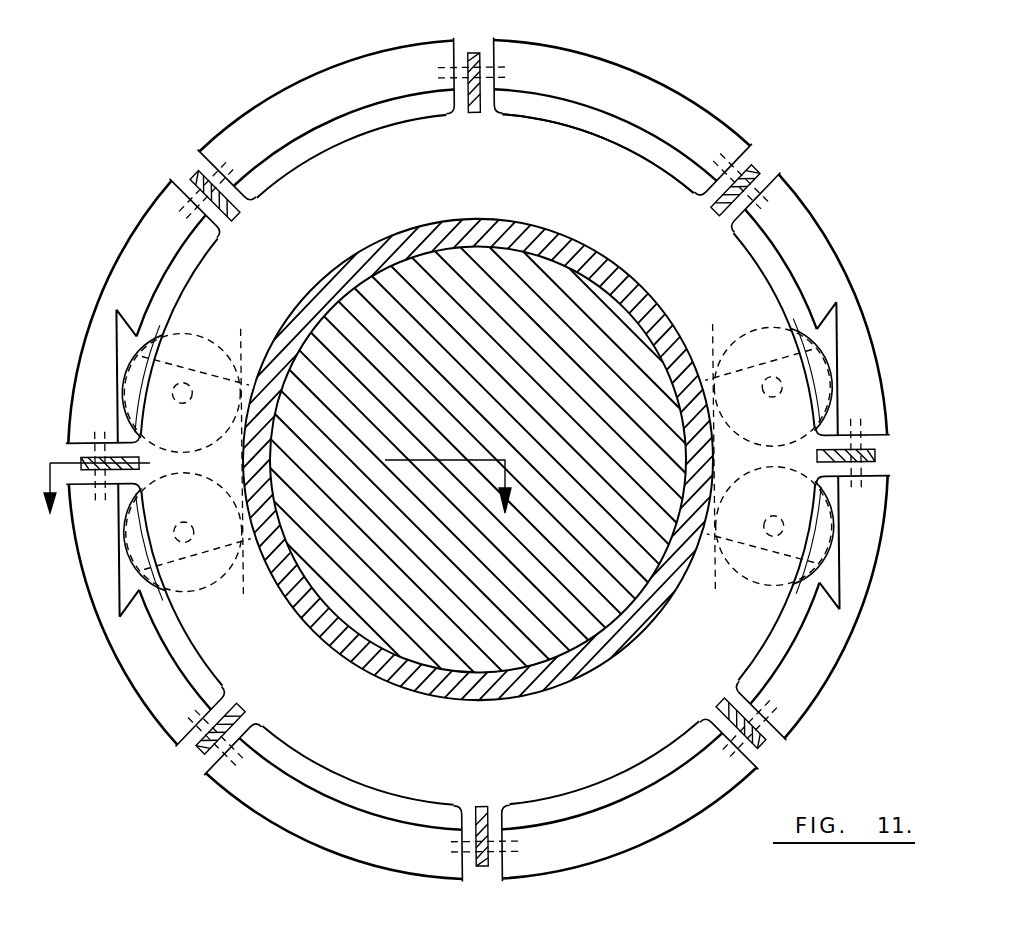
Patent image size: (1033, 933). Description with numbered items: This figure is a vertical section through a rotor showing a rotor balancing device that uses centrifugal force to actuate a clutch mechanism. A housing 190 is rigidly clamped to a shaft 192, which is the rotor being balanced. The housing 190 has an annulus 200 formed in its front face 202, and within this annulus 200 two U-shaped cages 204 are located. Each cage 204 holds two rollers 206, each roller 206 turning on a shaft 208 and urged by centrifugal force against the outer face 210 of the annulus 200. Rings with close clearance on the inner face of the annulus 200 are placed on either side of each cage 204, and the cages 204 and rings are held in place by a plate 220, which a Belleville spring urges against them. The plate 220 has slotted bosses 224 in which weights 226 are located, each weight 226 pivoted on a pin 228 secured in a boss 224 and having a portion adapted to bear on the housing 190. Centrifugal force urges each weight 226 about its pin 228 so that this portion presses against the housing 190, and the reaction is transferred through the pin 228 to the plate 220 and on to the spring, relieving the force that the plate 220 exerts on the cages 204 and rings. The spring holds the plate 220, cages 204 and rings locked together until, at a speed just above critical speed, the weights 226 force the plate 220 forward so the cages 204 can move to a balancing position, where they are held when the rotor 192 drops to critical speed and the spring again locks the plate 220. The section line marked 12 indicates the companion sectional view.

The housing 190 is at (548, 230).
The shaft 192 is at (494, 414).
The annulus 200 is at (735, 130).
The front face 202 is at (630, 80).
The cage 204 is at (250, 380).
The roller 206 is at (138, 345).
The shaft 208 is at (186, 380).
The outer face 210 is at (285, 160).
The plate 220 is at (495, 181).
The slotted boss 224 is at (452, 55).
The weight 226 is at (480, 83).
The pin 228 is at (495, 73).
The section line 12- 12 is at (280, 504).